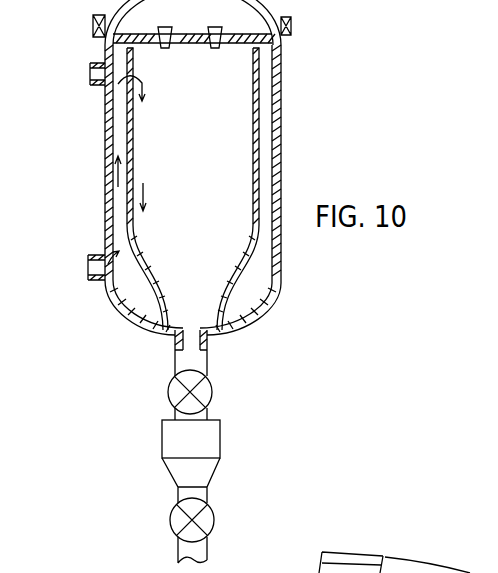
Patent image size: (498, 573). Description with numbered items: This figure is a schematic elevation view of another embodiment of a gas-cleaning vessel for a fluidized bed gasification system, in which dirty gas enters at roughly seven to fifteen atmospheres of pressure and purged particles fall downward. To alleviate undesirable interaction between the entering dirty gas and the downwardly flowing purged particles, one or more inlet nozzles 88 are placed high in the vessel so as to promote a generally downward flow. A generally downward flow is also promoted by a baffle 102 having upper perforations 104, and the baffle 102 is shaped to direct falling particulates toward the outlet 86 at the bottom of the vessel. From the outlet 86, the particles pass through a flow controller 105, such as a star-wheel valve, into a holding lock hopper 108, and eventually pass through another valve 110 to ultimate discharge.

The outlet 86 is at (207, 357).
The inlet nozzles 88 is at (93, 86).
The baffle 102 is at (127, 129).
The upper perforations 104 is at (259, 73).
The flow controller 105 is at (212, 396).
The holding lock hopper 108 is at (220, 443).
The valve 110 is at (214, 520).